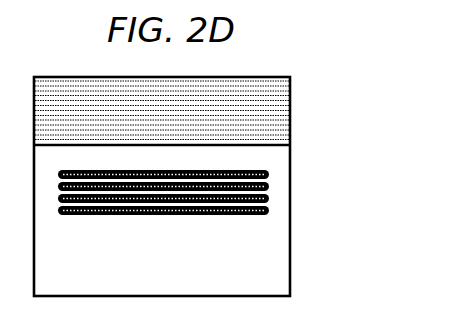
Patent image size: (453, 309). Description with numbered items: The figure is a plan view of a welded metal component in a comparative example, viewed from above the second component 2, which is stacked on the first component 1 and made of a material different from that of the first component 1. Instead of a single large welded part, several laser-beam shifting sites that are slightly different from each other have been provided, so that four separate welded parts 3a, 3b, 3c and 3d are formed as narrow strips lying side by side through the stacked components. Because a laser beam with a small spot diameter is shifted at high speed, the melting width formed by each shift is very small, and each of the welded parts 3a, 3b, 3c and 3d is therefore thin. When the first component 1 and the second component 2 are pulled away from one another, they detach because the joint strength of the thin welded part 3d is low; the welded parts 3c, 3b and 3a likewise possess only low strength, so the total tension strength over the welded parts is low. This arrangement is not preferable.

The first component 1 is at (291, 110).
The second component 2 is at (291, 242).
The separate welded part 3a is at (270, 171).
The separate welded part 3b is at (270, 183).
The separate welded part 3c is at (270, 194).
The separate welded part 3d is at (270, 209).